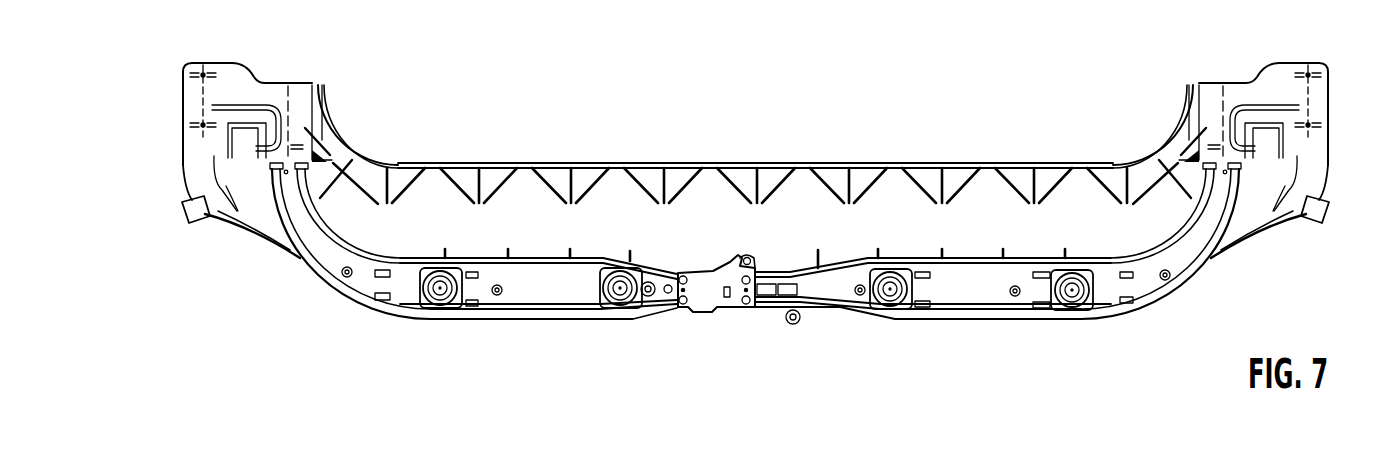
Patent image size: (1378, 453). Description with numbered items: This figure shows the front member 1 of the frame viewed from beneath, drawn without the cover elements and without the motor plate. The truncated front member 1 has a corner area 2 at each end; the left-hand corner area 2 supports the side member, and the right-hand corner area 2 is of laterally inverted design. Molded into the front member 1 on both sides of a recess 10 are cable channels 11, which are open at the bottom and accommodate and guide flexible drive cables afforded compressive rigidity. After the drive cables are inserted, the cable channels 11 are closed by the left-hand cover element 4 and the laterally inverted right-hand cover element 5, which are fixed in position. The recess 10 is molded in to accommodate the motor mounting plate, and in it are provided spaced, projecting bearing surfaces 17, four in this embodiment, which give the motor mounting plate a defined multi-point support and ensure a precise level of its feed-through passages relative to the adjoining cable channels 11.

The front member 1 is at (771, 161).
The corner area 2 is at (198, 163).
The left-hand cover element 4 is at (353, 302).
The right-hand cover element 5 is at (1171, 302).
The recess 10 is at (708, 292).
The cable channels 11 is at (530, 268).
The bearing surfaces 17 is at (683, 273).